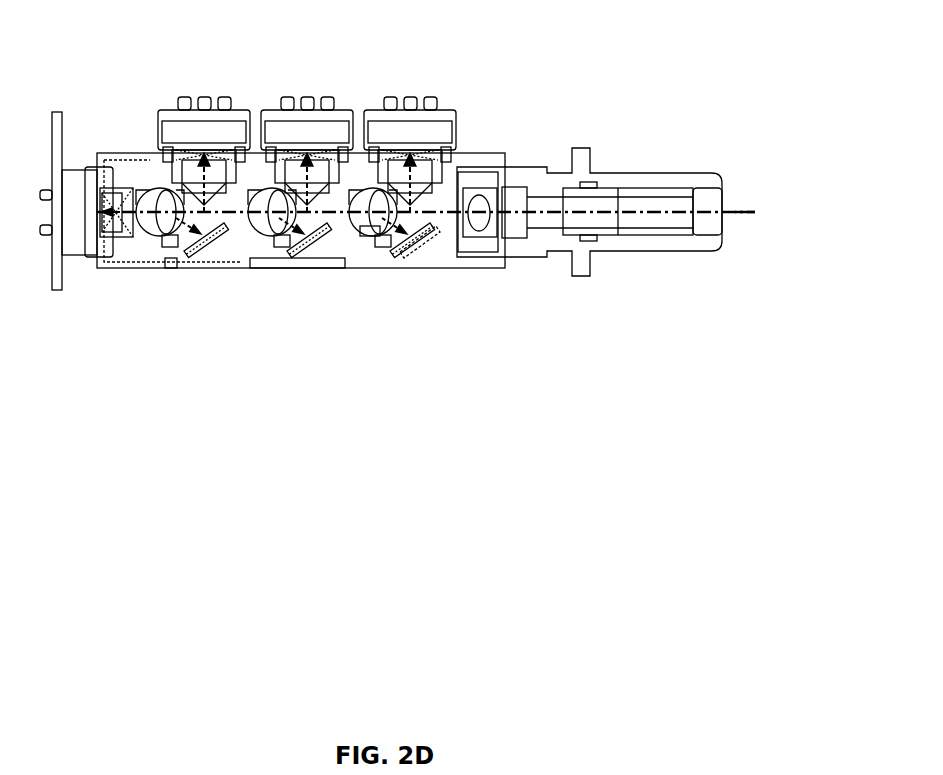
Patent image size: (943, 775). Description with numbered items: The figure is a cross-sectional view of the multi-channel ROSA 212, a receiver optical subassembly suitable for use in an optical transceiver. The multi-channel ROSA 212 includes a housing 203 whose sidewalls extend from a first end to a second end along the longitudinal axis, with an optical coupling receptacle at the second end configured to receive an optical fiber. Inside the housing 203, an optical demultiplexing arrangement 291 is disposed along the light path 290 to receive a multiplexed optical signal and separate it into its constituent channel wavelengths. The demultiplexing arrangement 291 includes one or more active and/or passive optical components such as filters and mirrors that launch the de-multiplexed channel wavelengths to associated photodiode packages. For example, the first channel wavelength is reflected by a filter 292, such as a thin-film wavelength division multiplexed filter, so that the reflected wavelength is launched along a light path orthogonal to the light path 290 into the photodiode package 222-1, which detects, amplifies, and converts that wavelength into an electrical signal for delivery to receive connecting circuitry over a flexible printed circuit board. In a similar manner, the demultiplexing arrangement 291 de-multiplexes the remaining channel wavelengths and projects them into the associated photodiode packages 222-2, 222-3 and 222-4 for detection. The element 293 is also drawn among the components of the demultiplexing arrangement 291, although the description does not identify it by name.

The multi-channel ROSA 212 is at (166, 86).
The photodiode package 222-1 is at (456, 112).
The photodiode package 222-2 is at (351, 112).
The photodiode package 222-3 is at (248, 112).
The photodiode package 222-4 is at (68, 168).
The housing 203 is at (498, 152).
The light path 290 is at (741, 212).
The optical demultiplexing arrangement 291 is at (368, 247).
The filter 292 is at (375, 238).
The filter element 293 is at (420, 250).